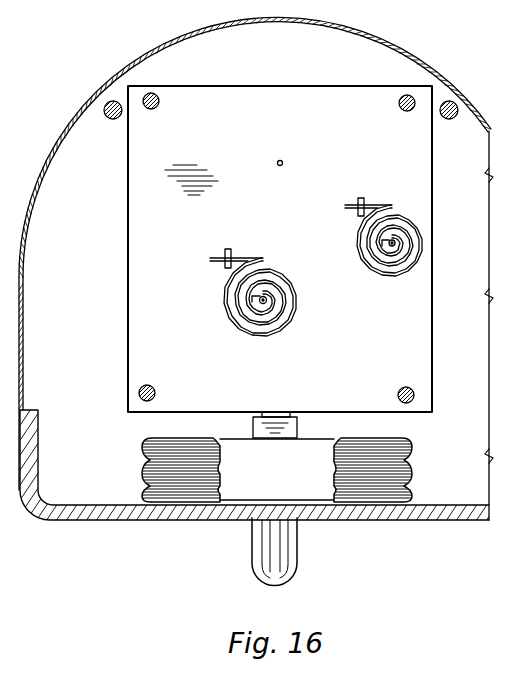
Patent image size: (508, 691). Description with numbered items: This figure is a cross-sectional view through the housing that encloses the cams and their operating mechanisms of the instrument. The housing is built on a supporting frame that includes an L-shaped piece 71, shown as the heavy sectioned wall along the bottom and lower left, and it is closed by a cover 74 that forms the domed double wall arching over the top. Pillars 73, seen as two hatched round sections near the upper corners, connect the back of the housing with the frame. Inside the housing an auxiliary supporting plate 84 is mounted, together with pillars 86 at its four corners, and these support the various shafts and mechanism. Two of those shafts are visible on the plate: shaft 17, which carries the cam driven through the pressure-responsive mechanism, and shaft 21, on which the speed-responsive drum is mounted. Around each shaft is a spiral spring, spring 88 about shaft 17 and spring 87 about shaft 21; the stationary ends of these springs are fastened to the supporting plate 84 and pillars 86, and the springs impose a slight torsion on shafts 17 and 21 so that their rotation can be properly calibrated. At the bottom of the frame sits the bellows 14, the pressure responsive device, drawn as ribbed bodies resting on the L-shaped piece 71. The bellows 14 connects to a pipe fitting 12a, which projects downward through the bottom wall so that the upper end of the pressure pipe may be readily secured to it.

The pipe fitting 12a is at (298, 560).
The bellows 14 is at (412, 470).
The shaft 17 is at (252, 300).
The shaft 21 is at (386, 242).
The L-shaped piece 71 is at (424, 521).
The pillars 73 is at (111, 120).
The cover 74 is at (459, 88).
The auxiliary supporting plate 84 is at (433, 330).
The pillars 86 is at (154, 93).
The spiral spring 87 is at (363, 247).
The spiral spring 88 is at (275, 339).